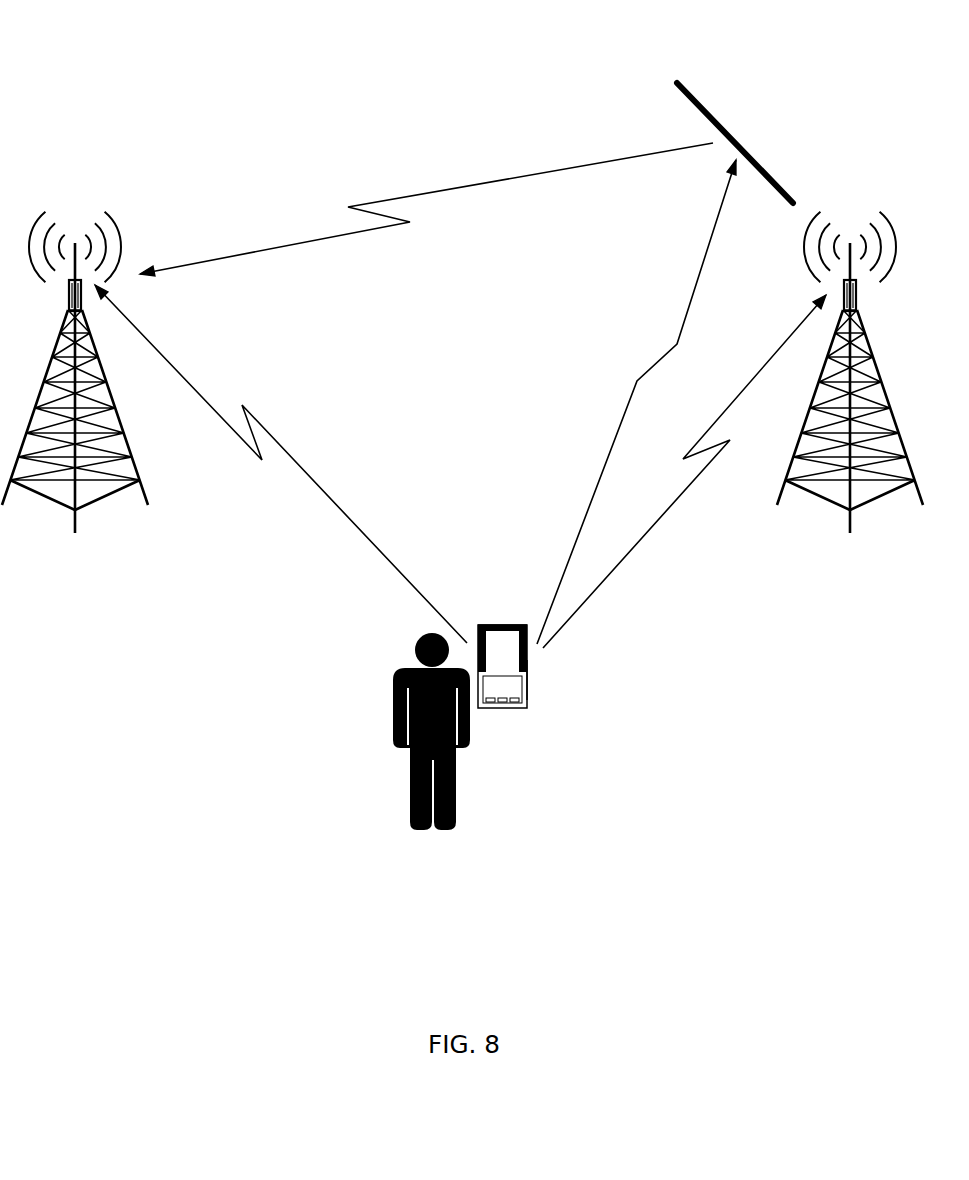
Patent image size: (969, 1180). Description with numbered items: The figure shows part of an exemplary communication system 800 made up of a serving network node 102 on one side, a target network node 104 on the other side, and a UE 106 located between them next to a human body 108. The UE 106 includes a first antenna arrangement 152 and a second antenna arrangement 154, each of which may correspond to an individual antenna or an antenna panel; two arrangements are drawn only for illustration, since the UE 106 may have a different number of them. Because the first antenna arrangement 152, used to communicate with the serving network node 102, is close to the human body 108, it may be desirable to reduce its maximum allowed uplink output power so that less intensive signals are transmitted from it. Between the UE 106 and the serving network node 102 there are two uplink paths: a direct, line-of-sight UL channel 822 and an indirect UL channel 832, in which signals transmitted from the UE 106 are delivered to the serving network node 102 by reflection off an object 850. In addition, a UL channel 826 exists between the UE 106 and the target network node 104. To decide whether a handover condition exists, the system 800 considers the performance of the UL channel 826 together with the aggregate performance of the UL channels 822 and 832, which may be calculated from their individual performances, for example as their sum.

The system 800 is at (108, 62).
The serving network node 102 is at (75, 536).
The target network node 104 is at (826, 520).
The UE 106 is at (498, 682).
The human body 108 is at (395, 700).
The first antenna arrangement 152 is at (478, 633).
The second antenna arrangement 154 is at (528, 662).
The direct UL channel 822 is at (325, 493).
The UL channel 826 is at (650, 525).
The indirect UL channel 832 is at (462, 187).
The object 850 is at (737, 137).